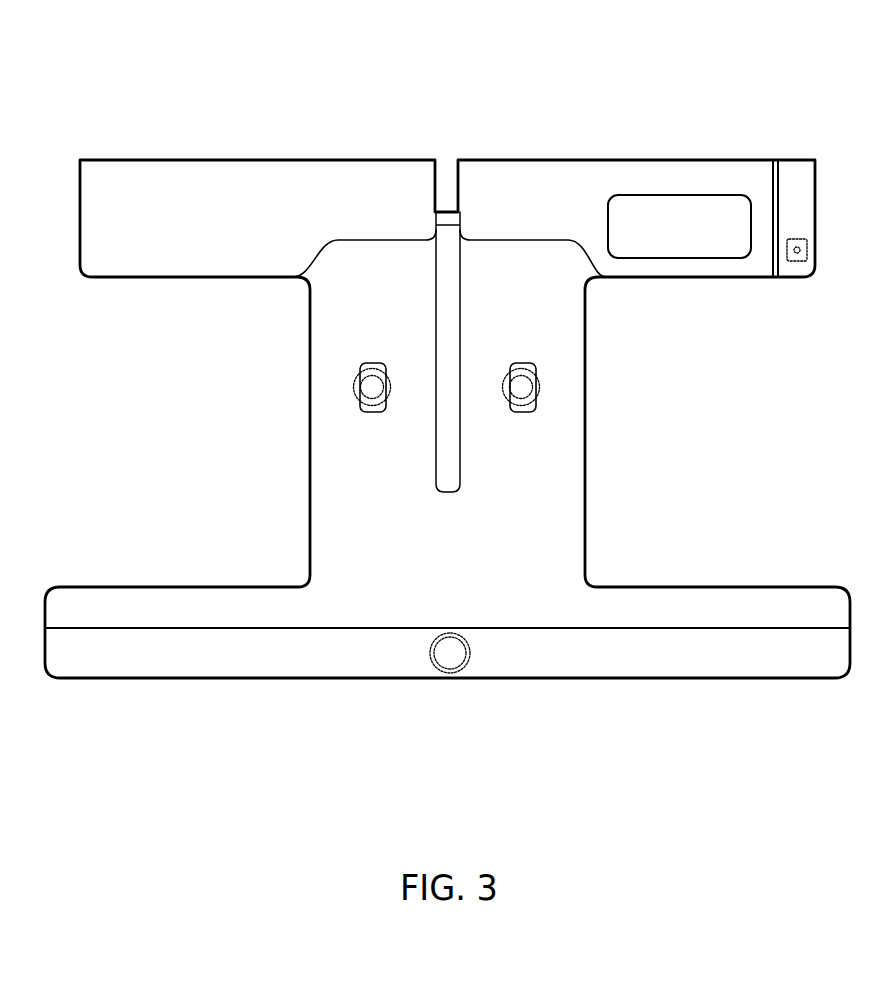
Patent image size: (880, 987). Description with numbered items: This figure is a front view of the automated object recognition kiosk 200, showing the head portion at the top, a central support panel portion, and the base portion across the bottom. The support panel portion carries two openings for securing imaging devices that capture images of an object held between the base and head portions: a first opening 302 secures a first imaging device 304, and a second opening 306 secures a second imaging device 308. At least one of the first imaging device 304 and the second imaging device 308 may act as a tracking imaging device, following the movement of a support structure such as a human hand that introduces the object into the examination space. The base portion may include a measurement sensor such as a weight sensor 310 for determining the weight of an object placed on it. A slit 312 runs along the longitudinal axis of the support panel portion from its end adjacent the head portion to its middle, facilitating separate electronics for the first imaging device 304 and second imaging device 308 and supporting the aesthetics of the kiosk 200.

The automated object recognition kiosk 200 is at (454, 63).
The first opening 302 is at (370, 412).
The first imaging device 304 is at (355, 385).
The second opening 306 is at (520, 412).
The second imaging device 308 is at (538, 387).
The weight sensor 310 is at (455, 672).
The slit 312 is at (444, 360).